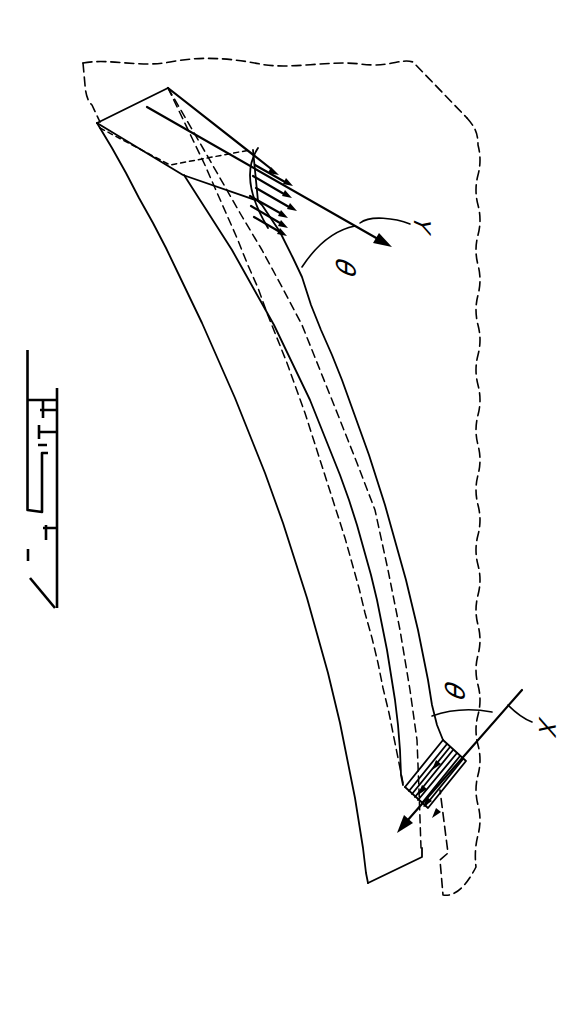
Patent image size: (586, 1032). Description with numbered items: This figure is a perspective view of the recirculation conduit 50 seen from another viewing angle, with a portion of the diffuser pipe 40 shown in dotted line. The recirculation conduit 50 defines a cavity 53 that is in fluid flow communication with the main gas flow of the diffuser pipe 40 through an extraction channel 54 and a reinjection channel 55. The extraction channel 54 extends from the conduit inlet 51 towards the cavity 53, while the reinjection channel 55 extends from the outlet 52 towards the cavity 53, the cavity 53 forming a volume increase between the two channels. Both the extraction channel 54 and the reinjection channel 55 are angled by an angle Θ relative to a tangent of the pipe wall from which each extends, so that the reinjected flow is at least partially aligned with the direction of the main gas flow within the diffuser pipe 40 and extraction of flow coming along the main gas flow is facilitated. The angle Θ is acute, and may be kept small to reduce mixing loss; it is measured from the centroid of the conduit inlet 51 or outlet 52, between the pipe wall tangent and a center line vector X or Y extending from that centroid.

The diffuser pipe 40 is at (442, 123).
The recirculation conduit 50 is at (320, 472).
The conduit inlet 51 is at (452, 800).
The conduit outlet 52 is at (265, 160).
The cavity 53 is at (284, 482).
The extraction channel 54 is at (440, 837).
The reinjection channel 55 is at (207, 147).